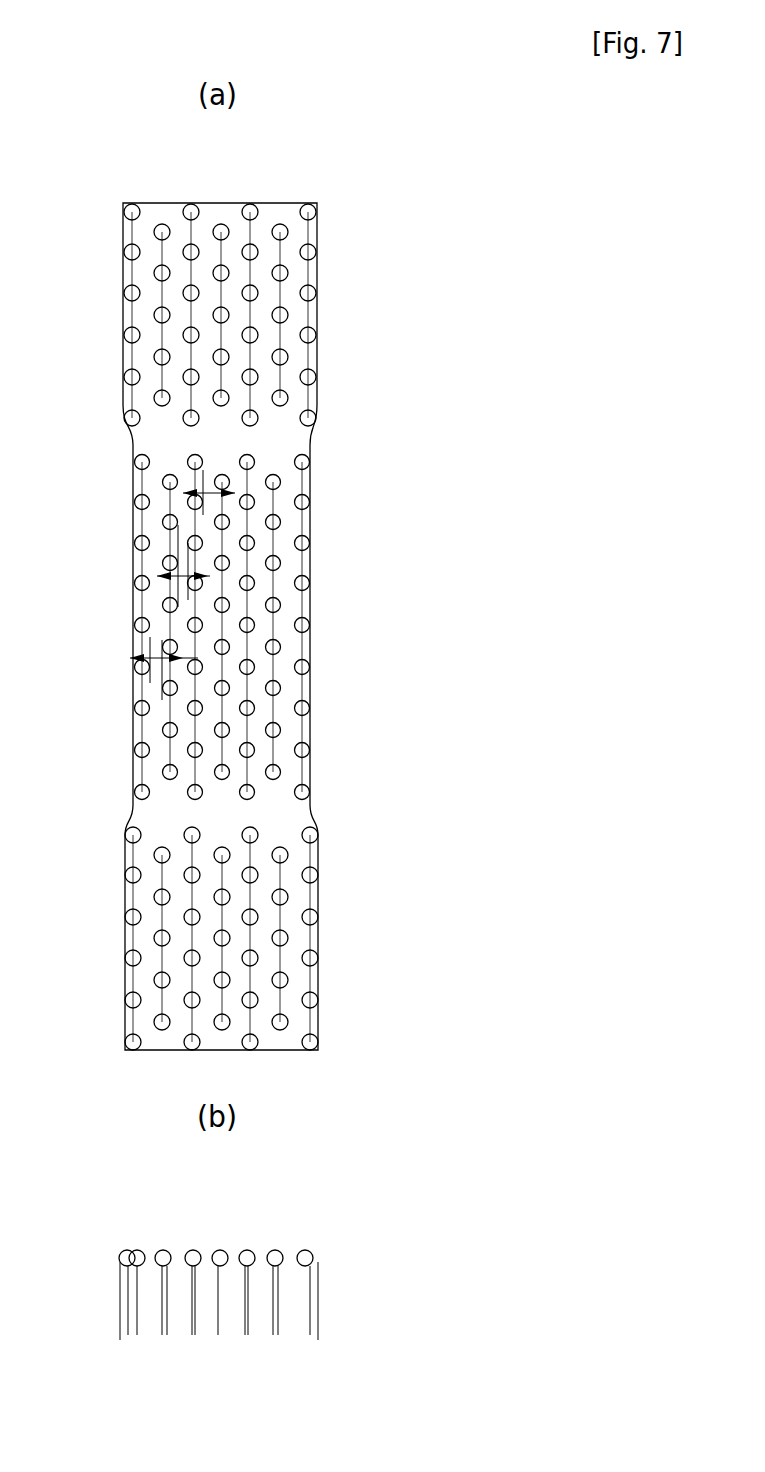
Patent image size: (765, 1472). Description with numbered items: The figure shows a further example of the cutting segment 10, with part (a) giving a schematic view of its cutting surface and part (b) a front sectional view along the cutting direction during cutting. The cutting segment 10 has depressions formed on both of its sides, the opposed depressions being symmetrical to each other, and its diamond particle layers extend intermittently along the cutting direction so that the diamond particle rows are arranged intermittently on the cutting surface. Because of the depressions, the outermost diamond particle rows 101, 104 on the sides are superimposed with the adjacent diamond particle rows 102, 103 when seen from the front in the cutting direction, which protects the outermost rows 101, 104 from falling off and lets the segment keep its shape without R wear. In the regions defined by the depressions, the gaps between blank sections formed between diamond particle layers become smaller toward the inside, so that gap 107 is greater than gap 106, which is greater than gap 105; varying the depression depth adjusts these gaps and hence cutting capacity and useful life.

The cutting segment 10 is at (230, 171).
The outermost diamond particle row 101 is at (125, 408).
The adjacent diamond particle row 102 is at (136, 458).
The adjacent diamond particle row 103 is at (309, 461).
The outermost diamond particle row 104 is at (316, 418).
The gap 105 is at (183, 493).
The gap 106 is at (157, 576).
The gap 107 is at (130, 658).